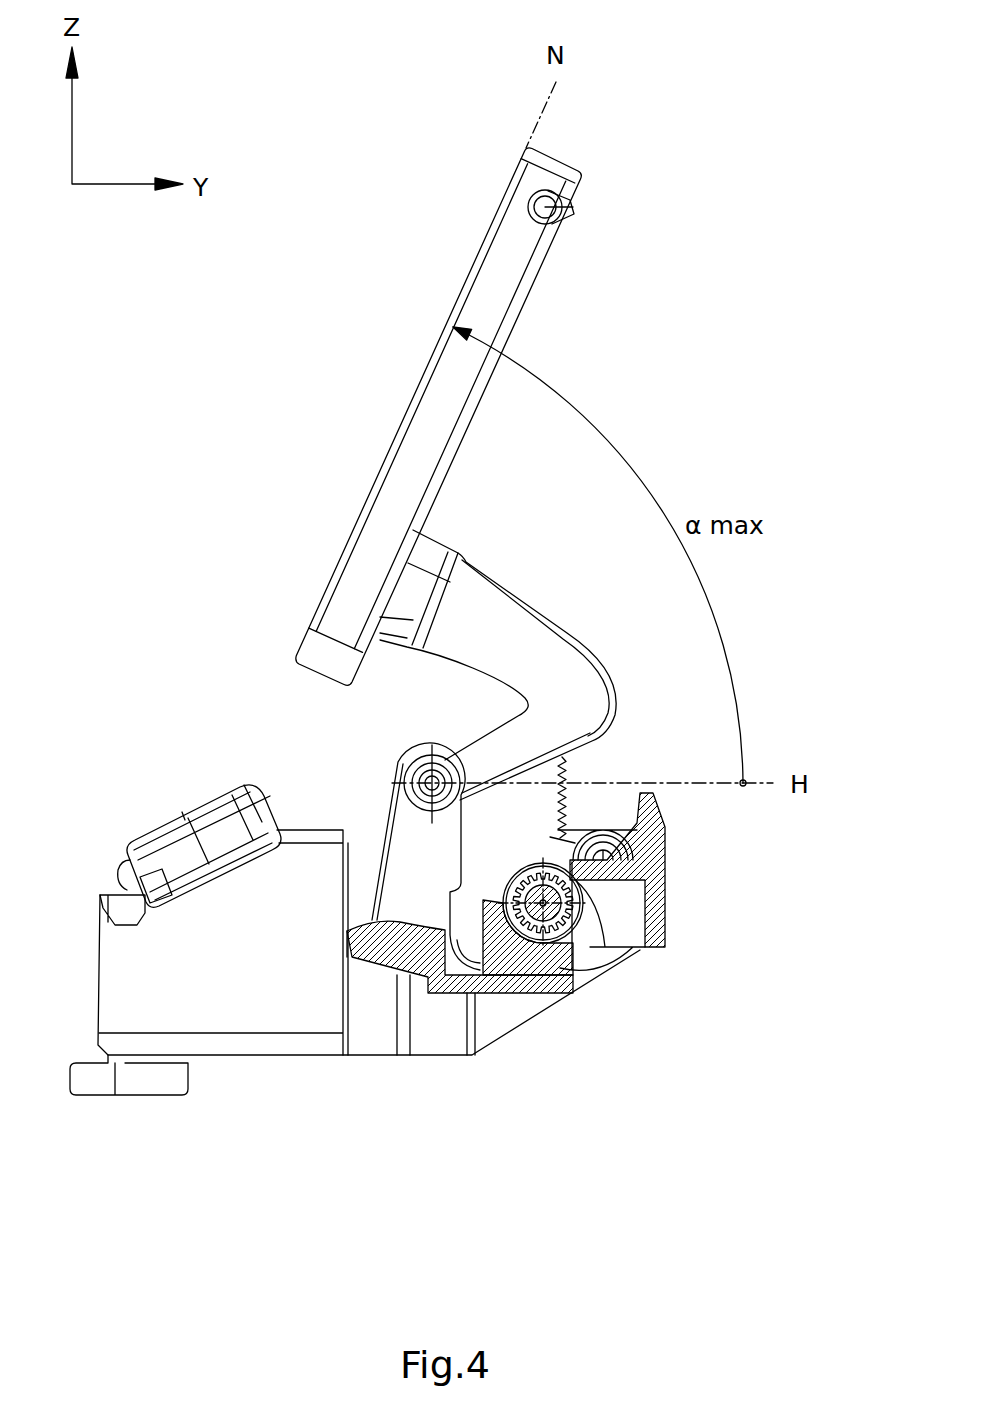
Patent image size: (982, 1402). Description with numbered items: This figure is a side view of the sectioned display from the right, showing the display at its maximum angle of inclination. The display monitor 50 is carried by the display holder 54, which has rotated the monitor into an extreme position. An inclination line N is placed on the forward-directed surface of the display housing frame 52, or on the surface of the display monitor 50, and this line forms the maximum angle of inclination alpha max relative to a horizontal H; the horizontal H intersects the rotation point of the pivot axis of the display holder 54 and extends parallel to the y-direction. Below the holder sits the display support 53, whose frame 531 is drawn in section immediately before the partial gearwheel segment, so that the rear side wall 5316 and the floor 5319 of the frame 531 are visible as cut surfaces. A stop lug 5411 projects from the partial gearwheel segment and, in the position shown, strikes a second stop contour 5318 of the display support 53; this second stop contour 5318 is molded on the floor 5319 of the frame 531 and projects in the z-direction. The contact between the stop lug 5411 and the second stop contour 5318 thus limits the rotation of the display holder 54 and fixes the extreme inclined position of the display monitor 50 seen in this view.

The display monitor 50 is at (398, 433).
The display housing frame 52 is at (327, 653).
The display support 53 is at (262, 1058).
The display holder 54 is at (485, 642).
The frame 531 is at (245, 972).
The rear side wall 5316 is at (667, 910).
The second stop contour 5318 is at (500, 935).
The floor 5319 is at (563, 995).
The stop lug 5411 is at (472, 935).